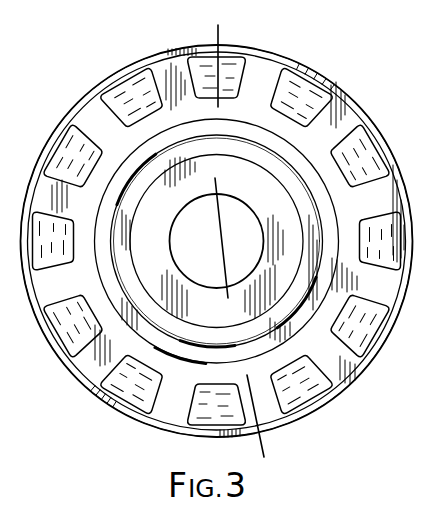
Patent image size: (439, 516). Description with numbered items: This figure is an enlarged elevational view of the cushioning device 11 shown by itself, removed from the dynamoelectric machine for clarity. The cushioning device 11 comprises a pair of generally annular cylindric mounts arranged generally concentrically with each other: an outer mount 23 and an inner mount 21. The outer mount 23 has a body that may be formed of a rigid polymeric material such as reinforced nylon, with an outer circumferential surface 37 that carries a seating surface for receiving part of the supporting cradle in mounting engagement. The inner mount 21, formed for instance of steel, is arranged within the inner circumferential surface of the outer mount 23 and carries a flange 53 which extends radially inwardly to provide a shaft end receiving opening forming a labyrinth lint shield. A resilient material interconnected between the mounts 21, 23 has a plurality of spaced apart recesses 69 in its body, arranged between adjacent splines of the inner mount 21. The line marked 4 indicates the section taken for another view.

The cushioning device 11 is at (349, 76).
The outer mount 23 is at (82, 380).
The outer circumferential surface 37 is at (136, 60).
The spaced apart recesses 69 is at (97, 132).
The inner mount 21 is at (259, 186).
The flange 53 is at (268, 202).
The section line 4- 4 is at (218, 29).